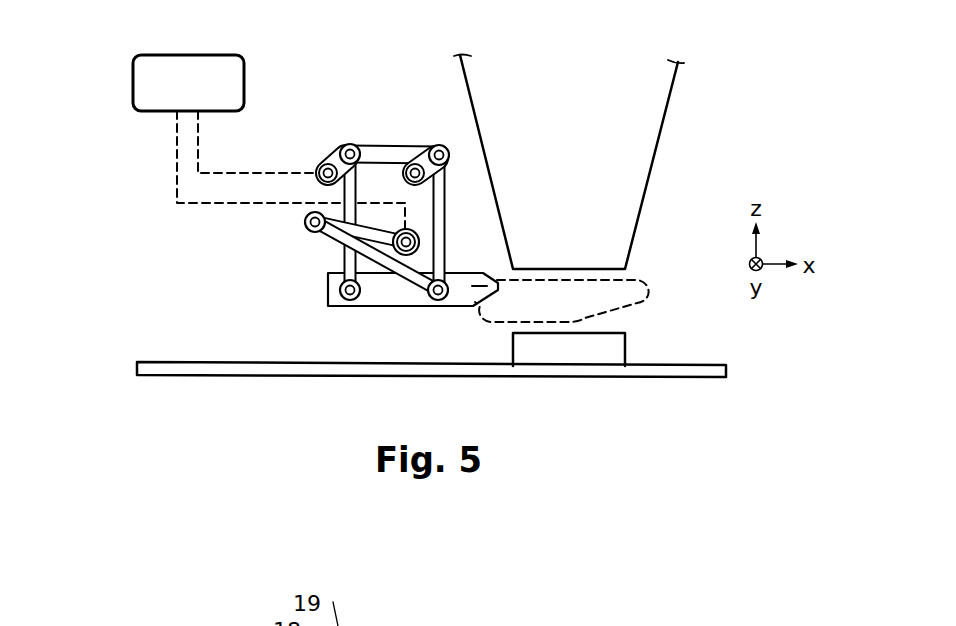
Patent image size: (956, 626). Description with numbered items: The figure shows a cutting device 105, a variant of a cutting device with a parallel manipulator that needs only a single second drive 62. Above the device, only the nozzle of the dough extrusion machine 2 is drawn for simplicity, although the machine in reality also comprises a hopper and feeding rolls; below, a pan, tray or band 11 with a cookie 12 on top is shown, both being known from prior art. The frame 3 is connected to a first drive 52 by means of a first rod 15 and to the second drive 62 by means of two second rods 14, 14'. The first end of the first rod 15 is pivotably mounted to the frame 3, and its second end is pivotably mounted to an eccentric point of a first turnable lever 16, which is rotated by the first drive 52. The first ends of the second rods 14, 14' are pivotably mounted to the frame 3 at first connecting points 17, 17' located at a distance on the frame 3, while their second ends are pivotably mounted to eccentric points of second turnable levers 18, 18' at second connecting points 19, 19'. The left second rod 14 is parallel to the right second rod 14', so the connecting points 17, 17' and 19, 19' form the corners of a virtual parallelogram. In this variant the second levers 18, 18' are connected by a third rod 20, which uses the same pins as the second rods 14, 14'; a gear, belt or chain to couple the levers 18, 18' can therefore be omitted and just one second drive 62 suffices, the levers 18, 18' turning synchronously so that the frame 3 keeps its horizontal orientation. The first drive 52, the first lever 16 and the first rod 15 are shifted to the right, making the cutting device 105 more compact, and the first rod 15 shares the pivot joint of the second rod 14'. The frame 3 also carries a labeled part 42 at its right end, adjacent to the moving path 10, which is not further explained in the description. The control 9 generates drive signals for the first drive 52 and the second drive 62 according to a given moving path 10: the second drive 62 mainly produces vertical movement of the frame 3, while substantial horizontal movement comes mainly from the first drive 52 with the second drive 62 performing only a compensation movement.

The dough extrusion machine 2 is at (692, 133).
The frame 3 is at (467, 306).
The control 9 is at (152, 75).
The moving path 10 is at (637, 303).
The band 11 is at (673, 370).
The cookie 12 is at (555, 353).
The left second rod 14 is at (308, 230).
The right second rod 14' is at (469, 222).
The first rod 15 is at (345, 240).
The first turnable lever 16 is at (340, 218).
The first connecting point 17 is at (403, 313).
The first connecting point 17' is at (324, 313).
The second turnable lever 18 is at (306, 111).
The second turnable lever 18' is at (478, 160).
The second connecting point 19 is at (329, 87).
The second connecting point 19' is at (484, 135).
The third rod 20 is at (383, 146).
The support tip of base plate 42 is at (493, 275).
The first drive 52 is at (418, 230).
The second drive 62 is at (322, 157).
The cutting device 105 is at (120, 175).